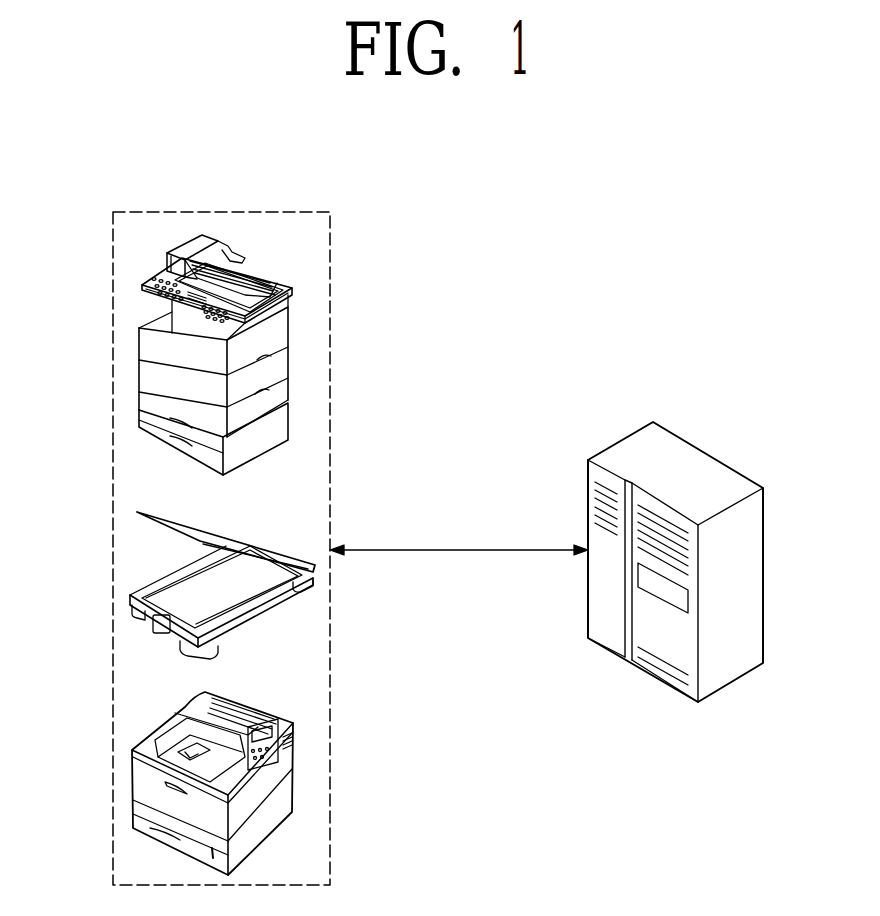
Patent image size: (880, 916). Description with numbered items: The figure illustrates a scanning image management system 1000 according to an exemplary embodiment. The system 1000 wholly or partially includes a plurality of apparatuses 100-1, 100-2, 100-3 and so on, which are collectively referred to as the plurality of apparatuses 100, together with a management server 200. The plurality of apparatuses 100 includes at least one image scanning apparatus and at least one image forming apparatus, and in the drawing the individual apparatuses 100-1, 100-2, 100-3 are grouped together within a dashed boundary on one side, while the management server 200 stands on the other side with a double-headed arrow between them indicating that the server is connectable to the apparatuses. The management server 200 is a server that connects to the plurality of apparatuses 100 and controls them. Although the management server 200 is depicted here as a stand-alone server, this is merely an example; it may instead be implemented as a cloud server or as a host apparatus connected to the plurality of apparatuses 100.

The scanning image management system 1000 is at (415, 132).
The plurality of apparatuses 100 is at (285, 212).
The apparatus 100-1 is at (139, 348).
The apparatus 100-2 is at (130, 597).
The apparatus 100-3 is at (133, 775).
The management server 200 is at (708, 452).